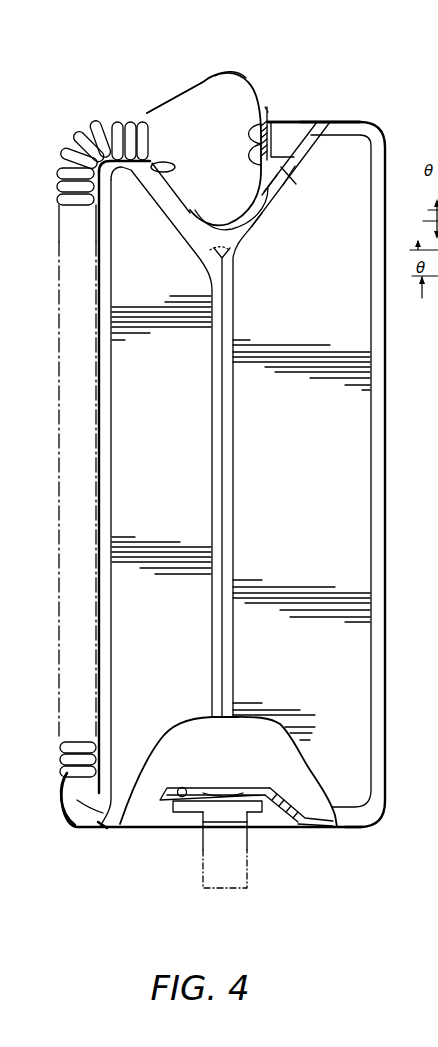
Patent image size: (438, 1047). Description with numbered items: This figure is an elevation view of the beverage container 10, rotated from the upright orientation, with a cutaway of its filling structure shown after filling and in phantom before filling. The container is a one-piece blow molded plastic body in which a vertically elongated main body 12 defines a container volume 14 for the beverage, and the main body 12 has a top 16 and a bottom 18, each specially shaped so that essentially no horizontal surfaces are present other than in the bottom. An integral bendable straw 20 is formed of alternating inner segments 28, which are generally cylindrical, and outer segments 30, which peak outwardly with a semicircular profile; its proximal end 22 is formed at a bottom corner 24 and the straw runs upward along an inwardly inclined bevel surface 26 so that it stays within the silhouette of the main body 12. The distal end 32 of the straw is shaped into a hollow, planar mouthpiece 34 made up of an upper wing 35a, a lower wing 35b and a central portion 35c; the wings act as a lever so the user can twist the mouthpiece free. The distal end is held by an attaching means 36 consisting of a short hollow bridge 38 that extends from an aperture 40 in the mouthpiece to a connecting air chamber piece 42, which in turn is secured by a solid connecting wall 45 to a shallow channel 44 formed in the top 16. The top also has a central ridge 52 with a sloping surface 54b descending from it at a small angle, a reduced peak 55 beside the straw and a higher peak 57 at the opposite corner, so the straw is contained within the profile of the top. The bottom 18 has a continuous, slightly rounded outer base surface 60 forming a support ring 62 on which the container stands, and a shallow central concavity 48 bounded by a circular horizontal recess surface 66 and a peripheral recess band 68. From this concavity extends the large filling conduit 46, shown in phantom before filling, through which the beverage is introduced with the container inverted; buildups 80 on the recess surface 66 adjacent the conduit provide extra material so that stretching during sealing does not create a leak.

The beverage container 10 is at (396, 437).
The main body 12 is at (388, 340).
The container volume 14 is at (288, 757).
The top 16 is at (310, 70).
The bottom 18 is at (365, 850).
The straw 20 is at (57, 282).
The proximal end 22 is at (72, 778).
The bottom corner 24 is at (62, 807).
The bevel surface 26 is at (111, 408).
The inner segments 28 is at (139, 120).
The outer segments 30 is at (123, 120).
The distal end 32 is at (246, 65).
The mouthpiece 34 is at (191, 143).
The upper wing 35a is at (212, 86).
The lower wing 35b is at (190, 247).
The central portion 35c is at (187, 208).
The attaching means 36 is at (325, 95).
The hollow bridge 38 is at (270, 105).
The aperture 40 is at (243, 154).
The connecting air chamber piece 42 is at (310, 125).
The channel 44 is at (256, 230).
The connecting wall 45 is at (294, 181).
The filling conduit 46 is at (248, 874).
The central concavity 48 is at (167, 829).
The central ridge 52 is at (268, 212).
The sloping surface 54b is at (236, 250).
The peak 55 is at (62, 170).
The peak 57 is at (353, 118).
The outer base surface 60 is at (70, 850).
The support ring 62 is at (110, 829).
The recess surface 66 is at (187, 789).
The peripheral recess band 68 is at (143, 830).
The buildups 80 is at (182, 829).